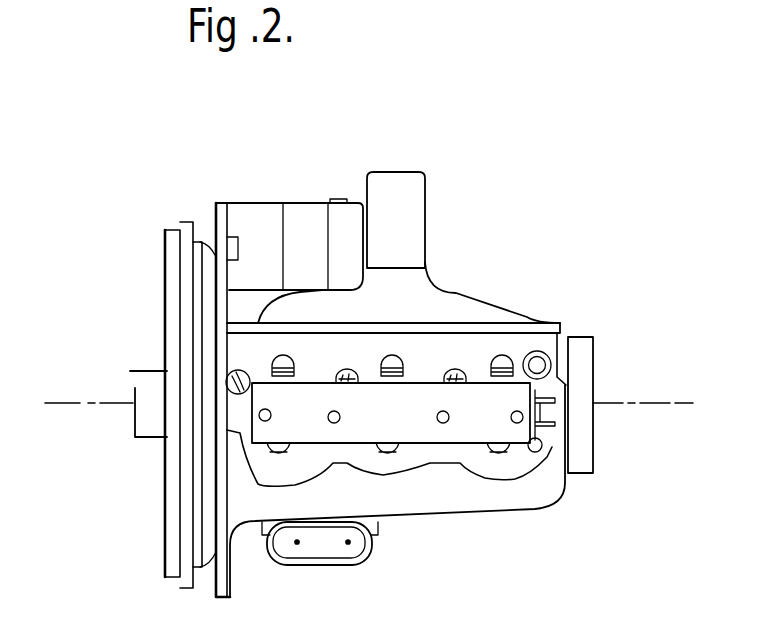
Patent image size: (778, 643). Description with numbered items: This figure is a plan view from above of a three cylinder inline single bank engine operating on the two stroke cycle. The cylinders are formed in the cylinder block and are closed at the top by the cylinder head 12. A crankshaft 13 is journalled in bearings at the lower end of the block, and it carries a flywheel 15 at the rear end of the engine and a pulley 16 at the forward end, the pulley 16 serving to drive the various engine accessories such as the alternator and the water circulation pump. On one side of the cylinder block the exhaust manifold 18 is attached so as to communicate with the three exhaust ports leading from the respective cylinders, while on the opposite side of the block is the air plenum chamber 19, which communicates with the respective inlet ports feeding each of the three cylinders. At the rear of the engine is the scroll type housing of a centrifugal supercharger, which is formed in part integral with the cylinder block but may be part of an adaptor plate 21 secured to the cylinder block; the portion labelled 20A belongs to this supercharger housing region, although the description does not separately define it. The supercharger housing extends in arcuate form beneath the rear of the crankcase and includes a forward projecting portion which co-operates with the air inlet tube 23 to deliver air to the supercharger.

The cylinder head 12 is at (538, 343).
The crankshaft 13 is at (157, 392).
The flywheel 15 is at (178, 487).
The pulley 16 is at (578, 442).
The exhaust manifold 18 is at (445, 293).
The air plenum chamber 19 is at (530, 488).
The flange plate 20A is at (212, 522).
The adaptor plate 21 is at (232, 597).
The air inlet tube 23 is at (360, 565).